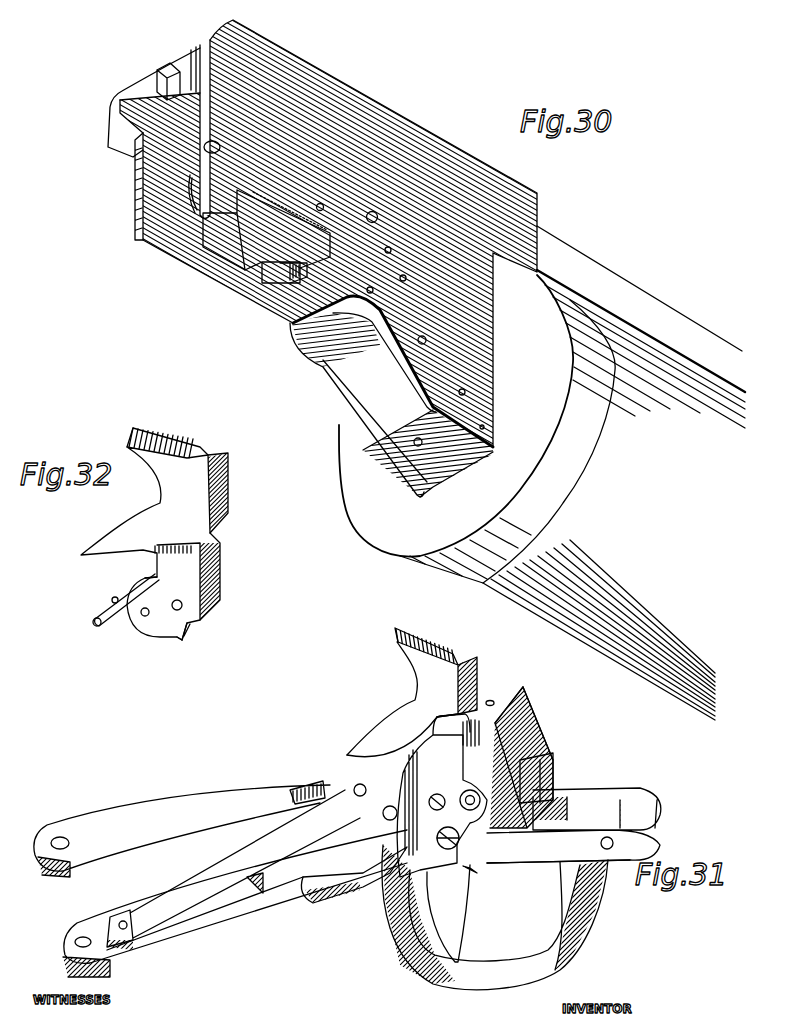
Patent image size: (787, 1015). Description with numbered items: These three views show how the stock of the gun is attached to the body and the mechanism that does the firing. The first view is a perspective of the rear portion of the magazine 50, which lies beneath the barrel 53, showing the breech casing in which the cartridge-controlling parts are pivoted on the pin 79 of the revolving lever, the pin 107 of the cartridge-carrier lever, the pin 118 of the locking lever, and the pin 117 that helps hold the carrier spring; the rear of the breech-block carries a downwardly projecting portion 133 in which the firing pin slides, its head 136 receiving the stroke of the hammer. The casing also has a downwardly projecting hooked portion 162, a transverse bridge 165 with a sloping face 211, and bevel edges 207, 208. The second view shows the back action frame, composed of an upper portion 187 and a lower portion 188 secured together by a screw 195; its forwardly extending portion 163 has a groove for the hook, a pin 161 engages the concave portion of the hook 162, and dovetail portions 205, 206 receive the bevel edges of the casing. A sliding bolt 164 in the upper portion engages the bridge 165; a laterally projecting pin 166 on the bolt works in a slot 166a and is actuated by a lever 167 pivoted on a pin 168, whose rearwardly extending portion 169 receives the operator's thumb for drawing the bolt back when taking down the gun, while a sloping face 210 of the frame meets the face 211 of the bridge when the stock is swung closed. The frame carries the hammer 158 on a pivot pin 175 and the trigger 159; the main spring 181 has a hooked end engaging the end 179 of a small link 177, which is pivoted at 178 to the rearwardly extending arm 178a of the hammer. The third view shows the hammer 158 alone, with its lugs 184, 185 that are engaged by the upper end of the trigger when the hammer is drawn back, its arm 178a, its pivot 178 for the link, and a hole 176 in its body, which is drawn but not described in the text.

In FIG. 30, the magazine 50 is at (577, 547).
In FIG. 30, the barrel 53 is at (575, 268).
In FIG. 30, the pin 79 is at (420, 341).
In FIG. 30, the pin 107 is at (322, 203).
In FIG. 30, the pin 117 is at (460, 393).
In FIG. 30, the pin 118 is at (375, 213).
In FIG. 30, the downwardly projecting portion 133 is at (187, 77).
In FIG. 30, the head 136 is at (167, 67).
In FIG. 32, the hammer 158 is at (197, 497).
In FIG. 31, the hammer 158 is at (445, 685).
In FIG. 31, the trigger 159 is at (433, 930).
In FIG. 31, the pin 161 is at (643, 789).
In FIG. 30, the hooked portion 162 is at (287, 288).
In FIG. 31, the forwardly extending portion 163 is at (567, 850).
In FIG. 31, the sliding bolt 164 is at (545, 745).
In FIG. 30, the transverse bridge 165 is at (240, 256).
In FIG. 31, the laterally projecting pin 166 is at (480, 795).
In FIG. 30, the slot 166a is at (218, 143).
In FIG. 31, the slot 166a is at (437, 794).
In FIG. 31, the lever 167 is at (555, 777).
In FIG. 31, the pin 168 is at (470, 868).
In FIG. 31, the rearwardly extending portion 169 is at (330, 892).
In FIG. 31, the pivot pin 175 is at (410, 698).
In FIG. 32, the pivot hole 176 is at (182, 604).
In FIG. 32, the link 177 is at (117, 618).
In FIG. 32, the pivot 178 is at (145, 617).
In FIG. 32, the rearwardly extending arm 178a is at (157, 625).
In FIG. 32, the end 179 is at (94, 624).
In FIG. 31, the main spring 181 is at (280, 840).
In FIG. 32, the lug 184 is at (201, 628).
In FIG. 32, the lug 185 is at (183, 642).
In FIG. 31, the upper portion of back action frame 187 is at (175, 797).
In FIG. 31, the lower portion of back action frame 188 is at (240, 917).
In FIG. 31, the screw 195 is at (500, 717).
In FIG. 31, the dovetail portion 205 is at (450, 722).
In FIG. 31, the dovetail portion 206 is at (487, 681).
In FIG. 30, the bevel edge 207 is at (207, 163).
In FIG. 30, the bevel edge 208 is at (140, 168).
In FIG. 31, the sloping face 210 is at (515, 715).
In FIG. 30, the sloping face 211 is at (257, 207).